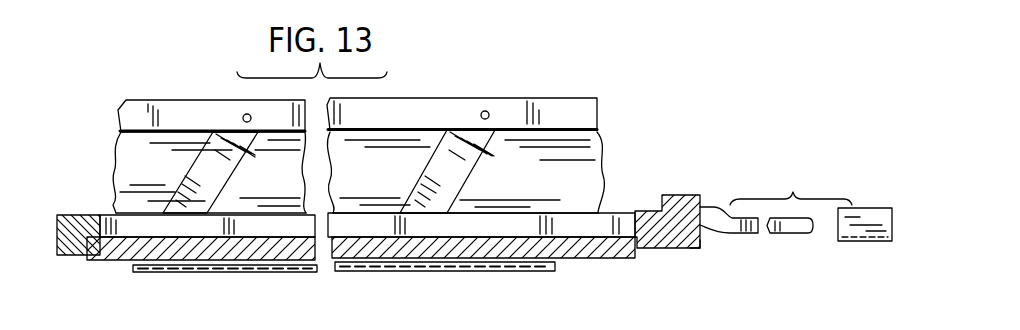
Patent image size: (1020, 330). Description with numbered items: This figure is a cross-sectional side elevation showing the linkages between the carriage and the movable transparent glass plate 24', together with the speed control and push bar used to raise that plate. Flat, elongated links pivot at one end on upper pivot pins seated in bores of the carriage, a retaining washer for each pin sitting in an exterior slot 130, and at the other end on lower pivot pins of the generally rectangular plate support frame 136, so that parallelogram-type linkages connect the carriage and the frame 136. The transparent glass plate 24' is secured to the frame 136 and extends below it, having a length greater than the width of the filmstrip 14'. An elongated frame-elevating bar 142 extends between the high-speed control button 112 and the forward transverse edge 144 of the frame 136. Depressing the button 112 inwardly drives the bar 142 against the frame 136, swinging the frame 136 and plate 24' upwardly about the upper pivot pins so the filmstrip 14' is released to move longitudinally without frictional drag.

The slot 130 is at (467, 138).
The plate support frame 136 is at (638, 211).
The frame-elevating bar 142 is at (717, 207).
The forward transverse edge 144 is at (703, 248).
The high-speed control button 112 is at (867, 222).
The filmstrip 14' is at (187, 257).
The transparent glass plate 24' is at (481, 254).